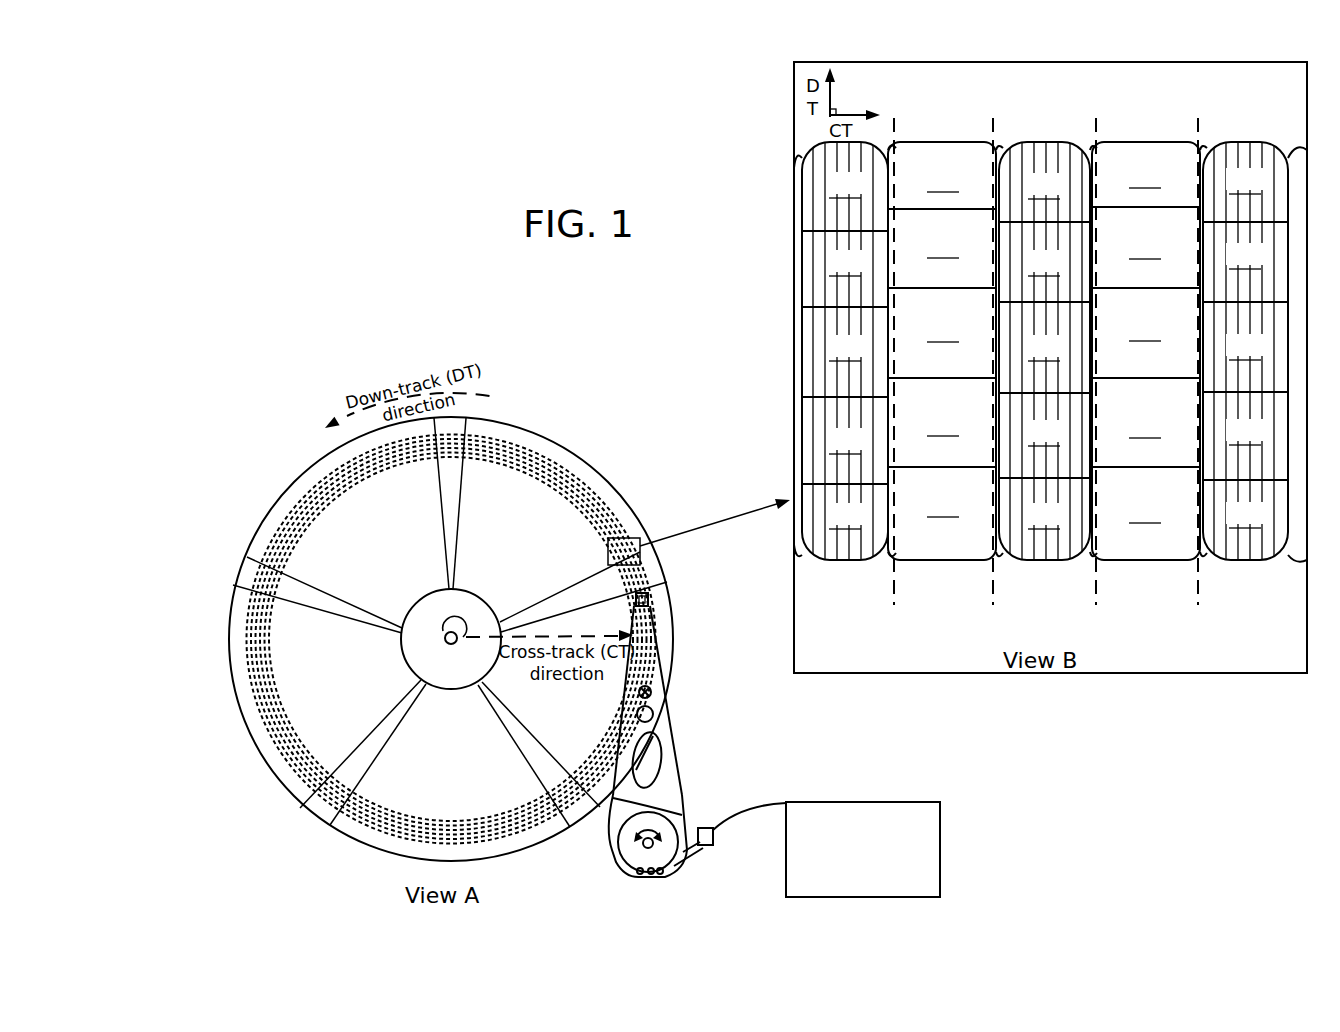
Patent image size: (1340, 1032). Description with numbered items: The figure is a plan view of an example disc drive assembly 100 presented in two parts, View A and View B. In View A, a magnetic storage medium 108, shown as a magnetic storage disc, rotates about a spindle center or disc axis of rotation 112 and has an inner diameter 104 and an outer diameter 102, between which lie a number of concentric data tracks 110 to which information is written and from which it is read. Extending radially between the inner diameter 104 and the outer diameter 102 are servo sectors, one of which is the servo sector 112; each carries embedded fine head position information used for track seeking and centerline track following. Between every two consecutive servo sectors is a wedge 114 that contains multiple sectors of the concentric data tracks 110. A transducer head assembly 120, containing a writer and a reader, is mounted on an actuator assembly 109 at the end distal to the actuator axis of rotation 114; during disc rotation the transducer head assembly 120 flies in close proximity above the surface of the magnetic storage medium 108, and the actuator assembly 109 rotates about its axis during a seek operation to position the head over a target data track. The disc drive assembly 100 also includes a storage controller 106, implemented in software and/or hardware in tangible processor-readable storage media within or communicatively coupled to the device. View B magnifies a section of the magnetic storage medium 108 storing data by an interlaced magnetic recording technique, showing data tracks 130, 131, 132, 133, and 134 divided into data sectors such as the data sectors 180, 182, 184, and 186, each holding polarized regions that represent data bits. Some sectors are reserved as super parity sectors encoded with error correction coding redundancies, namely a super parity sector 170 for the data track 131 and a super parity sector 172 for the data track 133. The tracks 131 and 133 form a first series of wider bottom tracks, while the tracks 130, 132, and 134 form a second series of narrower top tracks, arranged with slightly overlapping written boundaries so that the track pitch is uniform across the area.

The disc drive assembly 100 is at (385, 150).
The outer diameter 102 is at (316, 461).
The inner diameter 104 is at (403, 657).
The storage controller 106 is at (846, 885).
The magnetic storage medium 108 is at (346, 839).
The actuator assembly 109 is at (666, 730).
The concentric data tracks 110 is at (553, 456).
The servo sector 112 is at (233, 555).
The wedge 114 is at (230, 590).
The transducer head assembly 120 is at (650, 599).
The data track 130 is at (840, 578).
The data track 131 is at (936, 578).
The data track 132 is at (1046, 578).
The data track 133 is at (1140, 578).
The data track 134 is at (1238, 578).
The super parity sector 170 is at (943, 248).
The super parity sector 172 is at (1145, 331).
The data sector 180 is at (942, 351).
The data sector 182 is at (1001, 351).
The data sector 184 is at (1044, 351).
The data sector 186 is at (1245, 351).